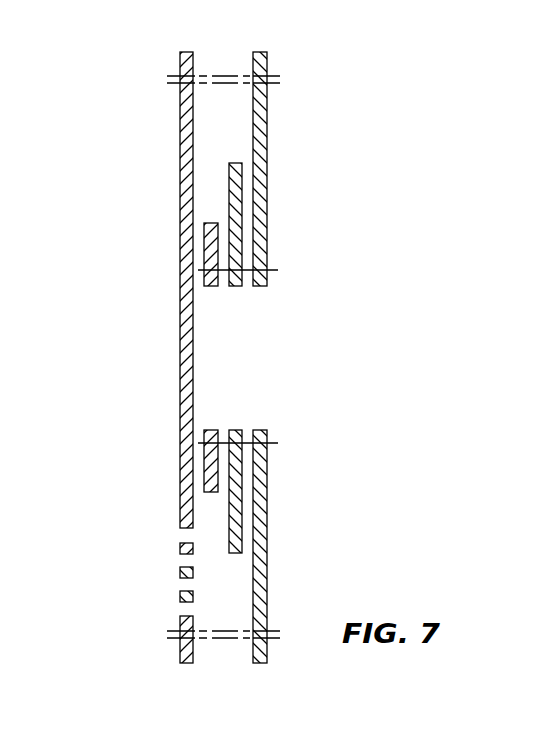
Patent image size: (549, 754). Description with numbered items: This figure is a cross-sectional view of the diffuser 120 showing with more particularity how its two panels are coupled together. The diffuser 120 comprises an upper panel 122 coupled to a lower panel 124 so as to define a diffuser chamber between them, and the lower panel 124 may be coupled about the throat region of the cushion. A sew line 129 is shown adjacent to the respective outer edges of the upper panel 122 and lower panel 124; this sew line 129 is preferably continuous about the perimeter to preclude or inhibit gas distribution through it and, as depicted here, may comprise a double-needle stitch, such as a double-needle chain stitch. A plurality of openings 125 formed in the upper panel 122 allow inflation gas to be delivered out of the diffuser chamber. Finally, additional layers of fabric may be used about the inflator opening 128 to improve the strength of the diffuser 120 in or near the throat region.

The diffuser 120 is at (320, 116).
The upper panel 122 is at (180, 165).
The lower panel 124 is at (267, 162).
The openings 125 is at (182, 582).
The inflator opening 128 is at (259, 287).
The sew line 129 is at (225, 78).